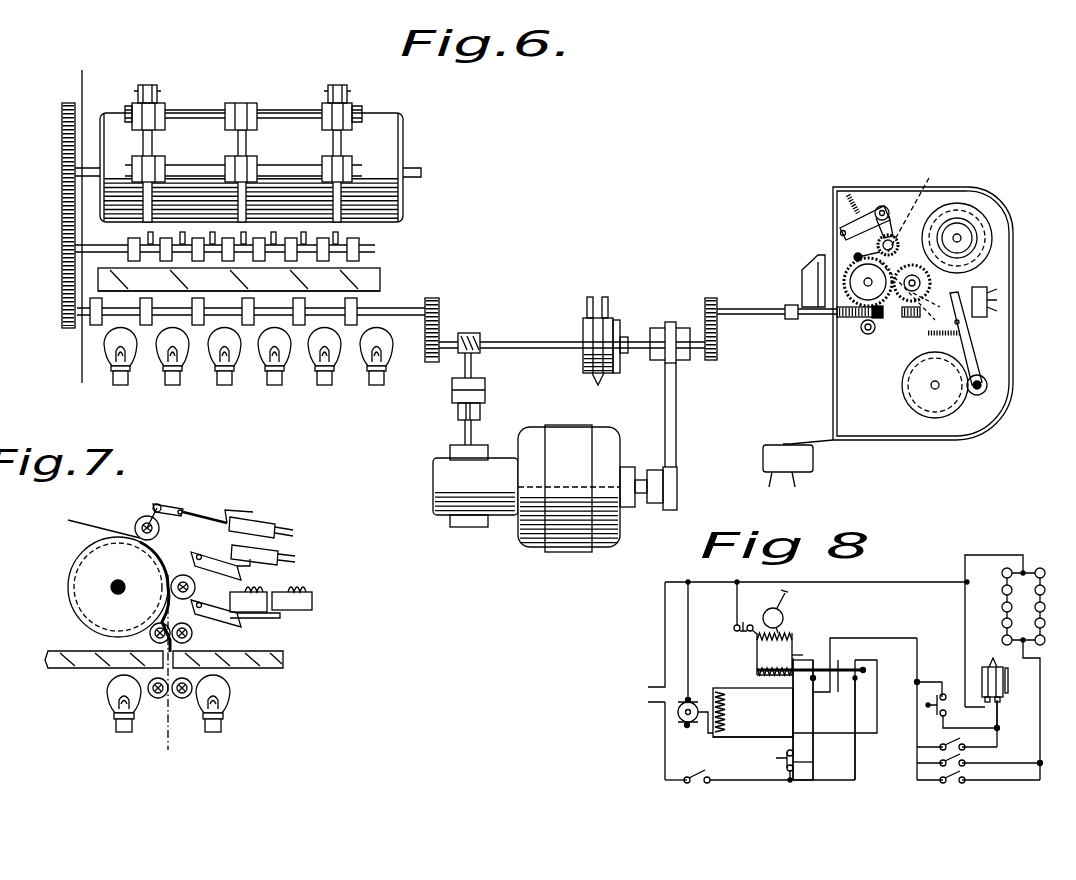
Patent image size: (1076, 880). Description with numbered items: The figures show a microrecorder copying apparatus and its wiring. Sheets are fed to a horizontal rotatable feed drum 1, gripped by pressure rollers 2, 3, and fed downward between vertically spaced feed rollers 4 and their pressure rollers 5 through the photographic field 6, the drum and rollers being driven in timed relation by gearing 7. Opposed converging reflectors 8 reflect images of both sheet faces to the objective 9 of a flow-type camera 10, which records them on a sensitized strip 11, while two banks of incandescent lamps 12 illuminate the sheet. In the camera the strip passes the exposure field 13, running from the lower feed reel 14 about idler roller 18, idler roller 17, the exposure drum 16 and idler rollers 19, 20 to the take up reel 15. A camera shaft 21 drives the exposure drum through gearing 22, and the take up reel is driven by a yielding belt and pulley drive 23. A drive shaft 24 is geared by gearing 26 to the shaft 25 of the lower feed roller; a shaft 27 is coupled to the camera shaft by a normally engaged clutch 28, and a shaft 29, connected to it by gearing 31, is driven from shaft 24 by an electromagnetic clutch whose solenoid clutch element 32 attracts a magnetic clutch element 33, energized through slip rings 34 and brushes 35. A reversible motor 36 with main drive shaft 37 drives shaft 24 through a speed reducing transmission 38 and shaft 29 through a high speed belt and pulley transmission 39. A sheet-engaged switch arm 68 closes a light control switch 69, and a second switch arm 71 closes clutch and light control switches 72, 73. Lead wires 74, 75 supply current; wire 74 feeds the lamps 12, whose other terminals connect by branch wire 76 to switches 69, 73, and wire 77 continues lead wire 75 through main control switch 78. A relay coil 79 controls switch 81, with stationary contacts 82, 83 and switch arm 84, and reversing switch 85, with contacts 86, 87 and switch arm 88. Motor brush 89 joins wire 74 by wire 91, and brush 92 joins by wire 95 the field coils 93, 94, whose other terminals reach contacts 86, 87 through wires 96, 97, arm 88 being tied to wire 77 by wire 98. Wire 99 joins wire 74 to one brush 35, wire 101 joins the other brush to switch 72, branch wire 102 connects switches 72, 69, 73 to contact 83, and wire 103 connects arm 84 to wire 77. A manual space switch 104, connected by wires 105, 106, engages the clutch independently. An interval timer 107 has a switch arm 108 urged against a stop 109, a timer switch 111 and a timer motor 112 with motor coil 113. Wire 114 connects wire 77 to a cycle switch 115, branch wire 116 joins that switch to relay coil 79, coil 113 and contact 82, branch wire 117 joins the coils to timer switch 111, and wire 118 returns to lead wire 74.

In FIG. 6, the feed drum 1 is at (390, 122).
In FIG. 7, the feed drum 1 is at (72, 567).
In FIG. 6, the pressure roller 2 is at (325, 107).
In FIG. 7, the pressure roller 2 is at (140, 522).
In FIG. 6, the pressure roller 3 is at (232, 165).
In FIG. 7, the pressure roller 3 is at (173, 593).
In FIG. 6, the feed rollers 4 is at (360, 258).
In FIG. 7, the feed rollers 4 is at (195, 634).
In FIG. 7, the pressure rollers 5 is at (153, 627).
In FIG. 6, the photographic field 6 is at (378, 284).
In FIG. 7, the photographic field 6 is at (163, 647).
In FIG. 6, the gearing 7 is at (112, 83).
In FIG. 6, the reflectors 8 is at (380, 284).
In FIG. 7, the reflectors 8 is at (75, 660).
In FIG. 6, the objective 9 is at (806, 273).
In FIG. 6, the photographic camera 10 is at (837, 188).
In FIG. 6, the sensitized strip 11 is at (935, 352).
In FIG. 6, the incandescent electric lamps 12 is at (185, 355).
In FIG. 7, the incandescent electric lamps 12 is at (115, 692).
In FIG. 8, the incandescent electric lamps 12 is at (1003, 607).
In FIG. 6, the exposure field 13 is at (848, 283).
In FIG. 6, the feed reel 14 is at (907, 403).
In FIG. 6, the take up reel 15 is at (970, 206).
In FIG. 6, the exposure drum 16 is at (850, 273).
In FIG. 6, the idler roller 17 is at (947, 268).
In FIG. 6, the idler roller 18 is at (866, 334).
In FIG. 6, the idler roller 19 is at (914, 207).
In FIG. 6, the idler roller 20 is at (882, 205).
In FIG. 6, the shaft 21 is at (890, 310).
In FIG. 6, the gearing 22 is at (920, 297).
In FIG. 6, the yielding belt and pulley drive 23 is at (945, 228).
In FIG. 6, the shaft 24 is at (510, 342).
In FIG. 6, the shaft 25 is at (382, 312).
In FIG. 6, the gearing 26 is at (439, 318).
In FIG. 6, the shaft 27 is at (733, 308).
In FIG. 6, the clutch 28 is at (795, 305).
In FIG. 6, the shaft 29 is at (697, 338).
In FIG. 6, the gearing 31 is at (717, 327).
In FIG. 6, the solenoid clutch element 32 is at (583, 334).
In FIG. 8, the solenoid clutch element 32 is at (982, 667).
In FIG. 6, the clutch element 33 is at (620, 333).
In FIG. 8, the clutch element 33 is at (1008, 687).
In FIG. 6, the slip rings 34 is at (597, 378).
In FIG. 8, the slip rings 34 is at (992, 655).
In FIG. 6, the brushes 35 is at (590, 297).
In FIG. 8, the brushes 35 is at (998, 699).
In FIG. 6, the reversible electric drive motor 36 is at (563, 433).
In FIG. 8, the reversible electric drive motor 36 is at (704, 701).
In FIG. 6, the motor shaft 37 is at (640, 497).
In FIG. 8, the motor shaft 37 is at (678, 712).
In FIG. 6, the speed reducing positive transmission 38 is at (452, 412).
In FIG. 6, the high speed belt and pulley transmission 39 is at (670, 413).
In FIG. 6, the switch arm 68 is at (150, 160).
In FIG. 7, the switch arm 68 is at (207, 562).
In FIG. 7, the light control switch 69 is at (278, 550).
In FIG. 8, the light control switch 69 is at (953, 782).
In FIG. 6, the switch arm 71 is at (148, 236).
In FIG. 7, the switch arm 71 is at (222, 594).
In FIG. 7, the clutch control switch 72 is at (260, 600).
In FIG. 8, the clutch control switch 72 is at (915, 757).
In FIG. 7, the light control switch 73 is at (300, 603).
In FIG. 8, the light control switch 73 is at (943, 775).
In FIG. 8, the lead wire 74 is at (866, 582).
In FIG. 8, the lead wire 75 is at (665, 762).
In FIG. 8, the branch wire 76 is at (1040, 725).
In FIG. 8, the wire 77 is at (748, 782).
In FIG. 8, the main control switch 78 is at (687, 783).
In FIG. 8, the relay coil 79 is at (757, 673).
In FIG. 8, the single pole double throw switch 81 is at (810, 660).
In FIG. 8, the stationary contact 82 is at (805, 661).
In FIG. 8, the stationary contact 83 is at (823, 676).
In FIG. 8, the switch arm 84 is at (834, 720).
In FIG. 8, the single pole double throw switch 85 is at (859, 658).
In FIG. 8, the stationary contact 86 is at (855, 665).
In FIG. 8, the stationary contact 87 is at (861, 661).
In FIG. 8, the switch arm 88 is at (866, 668).
In FIG. 8, the armature brush 89 is at (688, 690).
In FIG. 8, the wire 91 is at (688, 645).
In FIG. 8, the armature brush 92 is at (686, 727).
In FIG. 8, the field coil 93 is at (725, 700).
In FIG. 8, the field coil 94 is at (725, 723).
In FIG. 8, the wire 95 is at (703, 735).
In FIG. 8, the wire 96 is at (730, 688).
In FIG. 8, the wire 97 is at (728, 737).
In FIG. 8, the wire 98 is at (848, 756).
In FIG. 8, the wire 99 is at (965, 623).
In FIG. 8, the wire 101 is at (999, 737).
In FIG. 8, the branch wire 102 is at (918, 640).
In FIG. 8, the wire 103 is at (815, 768).
In FIG. 8, the space switch 104 is at (932, 705).
In FIG. 8, the wire 105 is at (942, 682).
In FIG. 8, the wire 106 is at (978, 714).
In FIG. 8, the interval timer 107 is at (771, 615).
In FIG. 8, the switch arm 108 is at (788, 589).
In FIG. 8, the stop 109 is at (788, 600).
In FIG. 8, the timer switch 111 is at (736, 632).
In FIG. 8, the electric timer motor 112 is at (780, 632).
In FIG. 8, the motor coil 113 is at (776, 654).
In FIG. 8, the wire 114 is at (792, 781).
In FIG. 8, the cycle switch 115 is at (783, 755).
In FIG. 8, the branch wire 116 is at (793, 720).
In FIG. 8, the branch wire 117 is at (757, 656).
In FIG. 8, the wire 118 is at (736, 607).